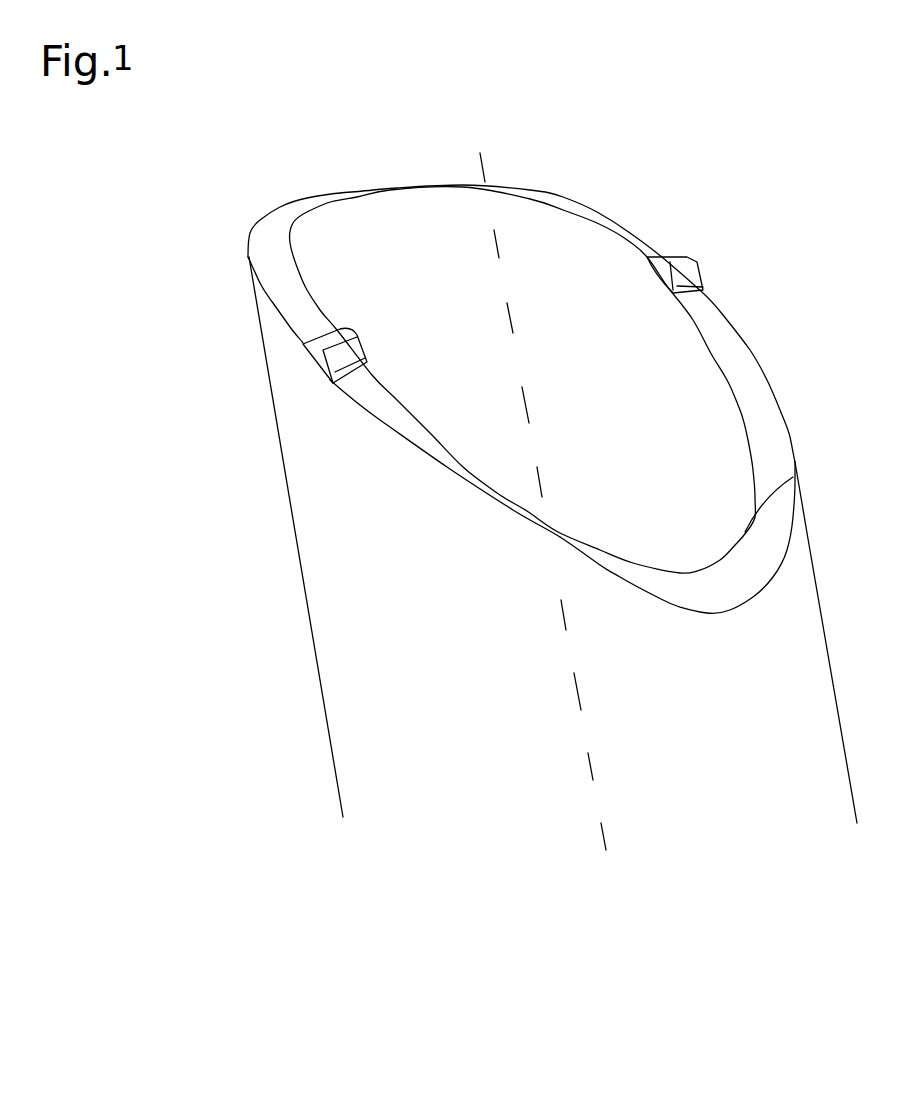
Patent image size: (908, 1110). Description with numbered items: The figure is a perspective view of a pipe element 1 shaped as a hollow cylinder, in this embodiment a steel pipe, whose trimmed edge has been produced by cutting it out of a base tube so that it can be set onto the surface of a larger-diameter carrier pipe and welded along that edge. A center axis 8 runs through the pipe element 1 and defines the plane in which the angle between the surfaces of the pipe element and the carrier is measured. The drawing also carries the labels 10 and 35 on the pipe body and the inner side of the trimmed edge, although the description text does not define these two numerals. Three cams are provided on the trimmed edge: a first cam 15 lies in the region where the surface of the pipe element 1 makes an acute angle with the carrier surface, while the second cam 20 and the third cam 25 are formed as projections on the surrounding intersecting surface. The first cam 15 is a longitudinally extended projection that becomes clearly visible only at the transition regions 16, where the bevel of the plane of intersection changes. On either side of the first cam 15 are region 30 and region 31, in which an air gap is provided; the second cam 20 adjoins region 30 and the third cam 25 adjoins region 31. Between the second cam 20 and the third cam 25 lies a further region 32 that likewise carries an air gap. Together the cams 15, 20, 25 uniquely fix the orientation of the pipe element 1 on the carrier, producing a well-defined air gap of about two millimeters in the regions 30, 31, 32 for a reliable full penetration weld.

The pipe element 1 is at (250, 621).
The center axis 8 is at (470, 93).
The container body 10 is at (608, 215).
The first cam 15 is at (705, 598).
The transition regions 16 is at (772, 501).
The second cam 20 is at (690, 272).
The third cam 25 is at (352, 347).
The region 30 is at (780, 427).
The region 31 is at (402, 432).
The region 32 is at (362, 192).
The inner rim edge 35 is at (721, 367).